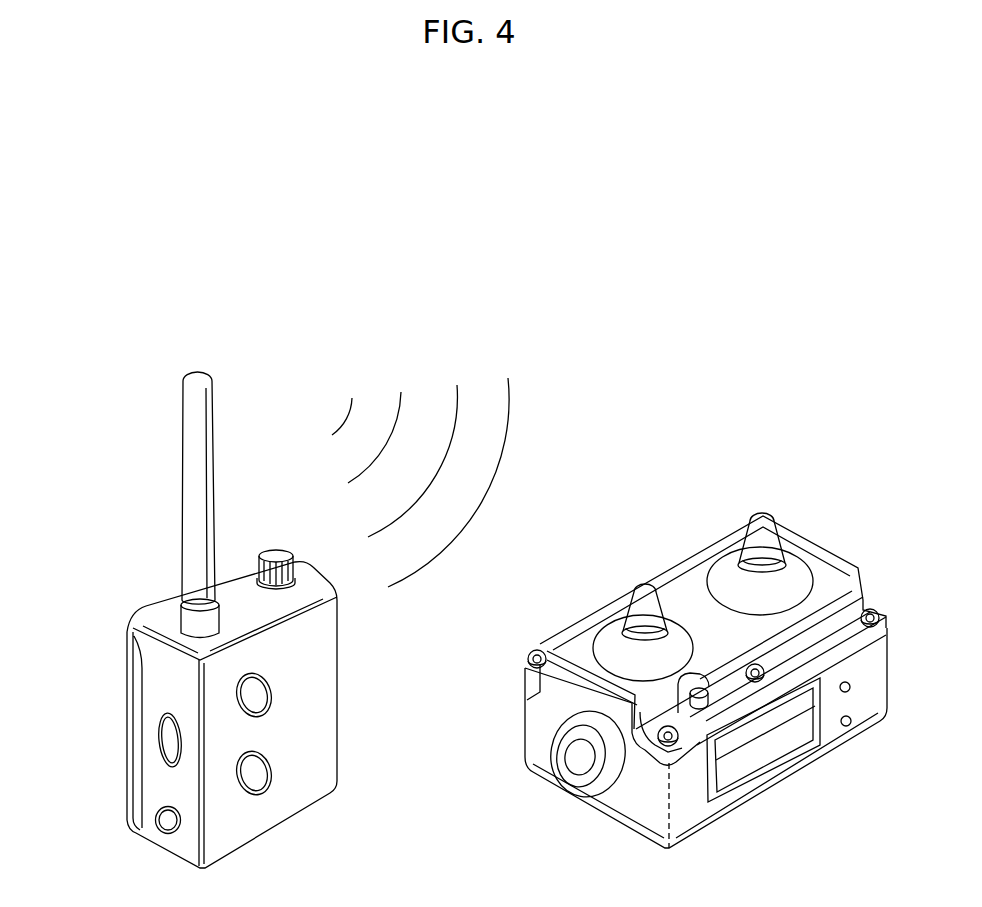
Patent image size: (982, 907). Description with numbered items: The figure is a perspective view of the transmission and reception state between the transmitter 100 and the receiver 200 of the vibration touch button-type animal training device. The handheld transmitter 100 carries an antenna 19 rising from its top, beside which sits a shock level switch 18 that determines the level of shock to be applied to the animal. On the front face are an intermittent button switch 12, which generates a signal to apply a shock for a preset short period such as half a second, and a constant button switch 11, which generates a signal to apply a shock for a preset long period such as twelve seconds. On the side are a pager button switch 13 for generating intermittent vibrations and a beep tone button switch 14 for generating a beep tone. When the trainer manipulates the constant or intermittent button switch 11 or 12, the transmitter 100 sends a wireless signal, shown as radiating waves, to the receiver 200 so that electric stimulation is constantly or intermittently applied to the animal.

The transmitter 100 is at (271, 619).
The receiver 200 is at (653, 561).
The antenna 19 is at (206, 391).
The shock level switch 18 is at (277, 549).
The intermittent button switch 12 is at (259, 688).
The constant button switch 11 is at (259, 768).
The pager button switch 13 is at (165, 744).
The beep tone button switch 14 is at (160, 830).